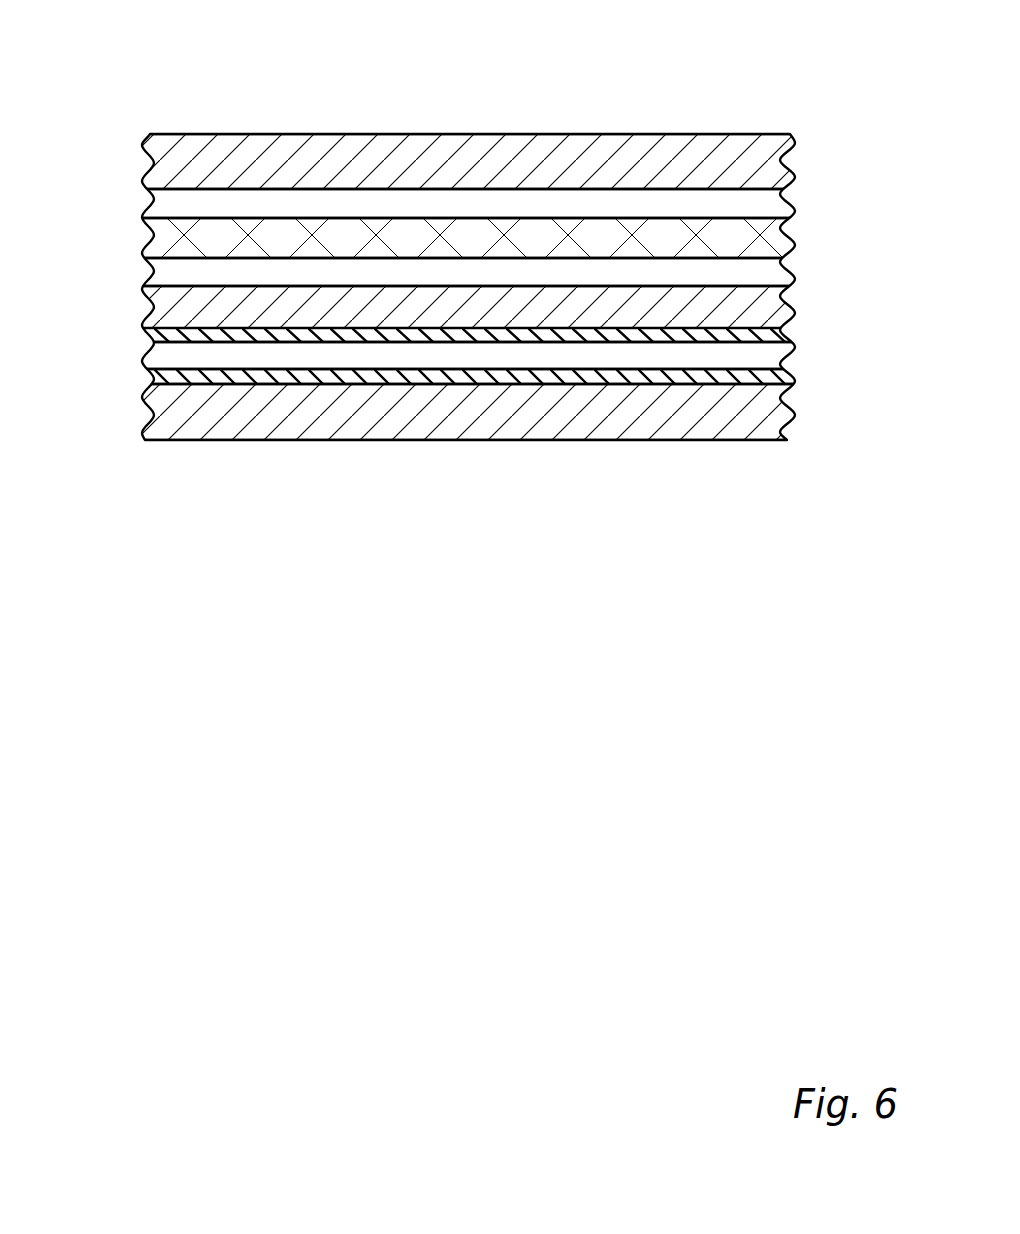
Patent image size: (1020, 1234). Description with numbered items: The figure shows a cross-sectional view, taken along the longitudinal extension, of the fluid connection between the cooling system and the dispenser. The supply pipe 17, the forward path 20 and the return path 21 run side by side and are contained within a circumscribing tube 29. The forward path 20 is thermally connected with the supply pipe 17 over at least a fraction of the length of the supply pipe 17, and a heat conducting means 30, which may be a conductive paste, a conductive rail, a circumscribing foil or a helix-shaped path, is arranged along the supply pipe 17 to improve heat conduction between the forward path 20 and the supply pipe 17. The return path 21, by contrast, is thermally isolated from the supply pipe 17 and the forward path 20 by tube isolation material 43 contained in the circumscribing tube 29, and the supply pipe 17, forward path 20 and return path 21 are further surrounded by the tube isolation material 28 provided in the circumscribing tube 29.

The tube isolation material 28 is at (163, 162).
The circumscribing tube 29 is at (238, 134).
The heat conducting means 30 is at (343, 230).
The supply pipe 17 is at (537, 203).
The forward path 20 is at (745, 273).
The return path 21 is at (745, 356).
The tube isolation material 43 is at (588, 375).